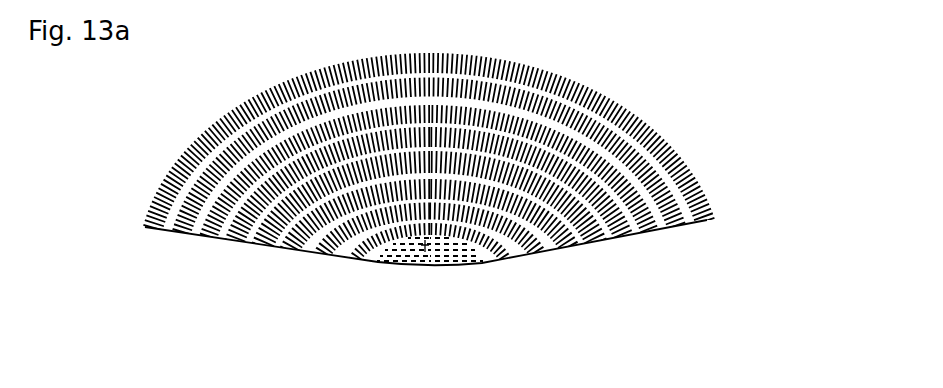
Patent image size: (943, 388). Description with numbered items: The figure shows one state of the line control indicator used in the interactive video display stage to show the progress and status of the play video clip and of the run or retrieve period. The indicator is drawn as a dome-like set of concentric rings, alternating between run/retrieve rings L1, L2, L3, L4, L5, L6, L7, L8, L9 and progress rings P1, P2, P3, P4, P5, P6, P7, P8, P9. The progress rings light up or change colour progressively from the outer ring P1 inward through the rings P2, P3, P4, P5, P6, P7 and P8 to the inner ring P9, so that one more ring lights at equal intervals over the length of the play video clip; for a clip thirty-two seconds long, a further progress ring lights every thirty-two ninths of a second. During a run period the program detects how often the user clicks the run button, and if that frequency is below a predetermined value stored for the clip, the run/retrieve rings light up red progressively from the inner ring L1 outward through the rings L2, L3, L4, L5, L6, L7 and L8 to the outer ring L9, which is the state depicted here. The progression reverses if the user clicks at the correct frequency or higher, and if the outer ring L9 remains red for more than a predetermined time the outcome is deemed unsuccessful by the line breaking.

The run/retrieve ring L1 is at (393, 263).
The run/retrieve ring L2 is at (360, 257).
The run/retrieve ring L3 is at (327, 252).
The run/retrieve ring L4 is at (293, 247).
The run/retrieve ring L5 is at (263, 243).
The run/retrieve ring L6 is at (237, 240).
The run/retrieve ring L7 is at (210, 237).
The run/retrieve ring L8 is at (183, 233).
The run/retrieve ring L9 is at (157, 230).
The progress ring P1 is at (707, 221).
The progress ring P2 is at (677, 225).
The progress ring P3 is at (647, 232).
The progress ring P4 is at (617, 237).
The progress ring P5 is at (587, 241).
The progress ring P6 is at (567, 244).
The progress ring P7 is at (537, 249).
The progress ring P8 is at (507, 253).
The progress ring P9 is at (477, 258).